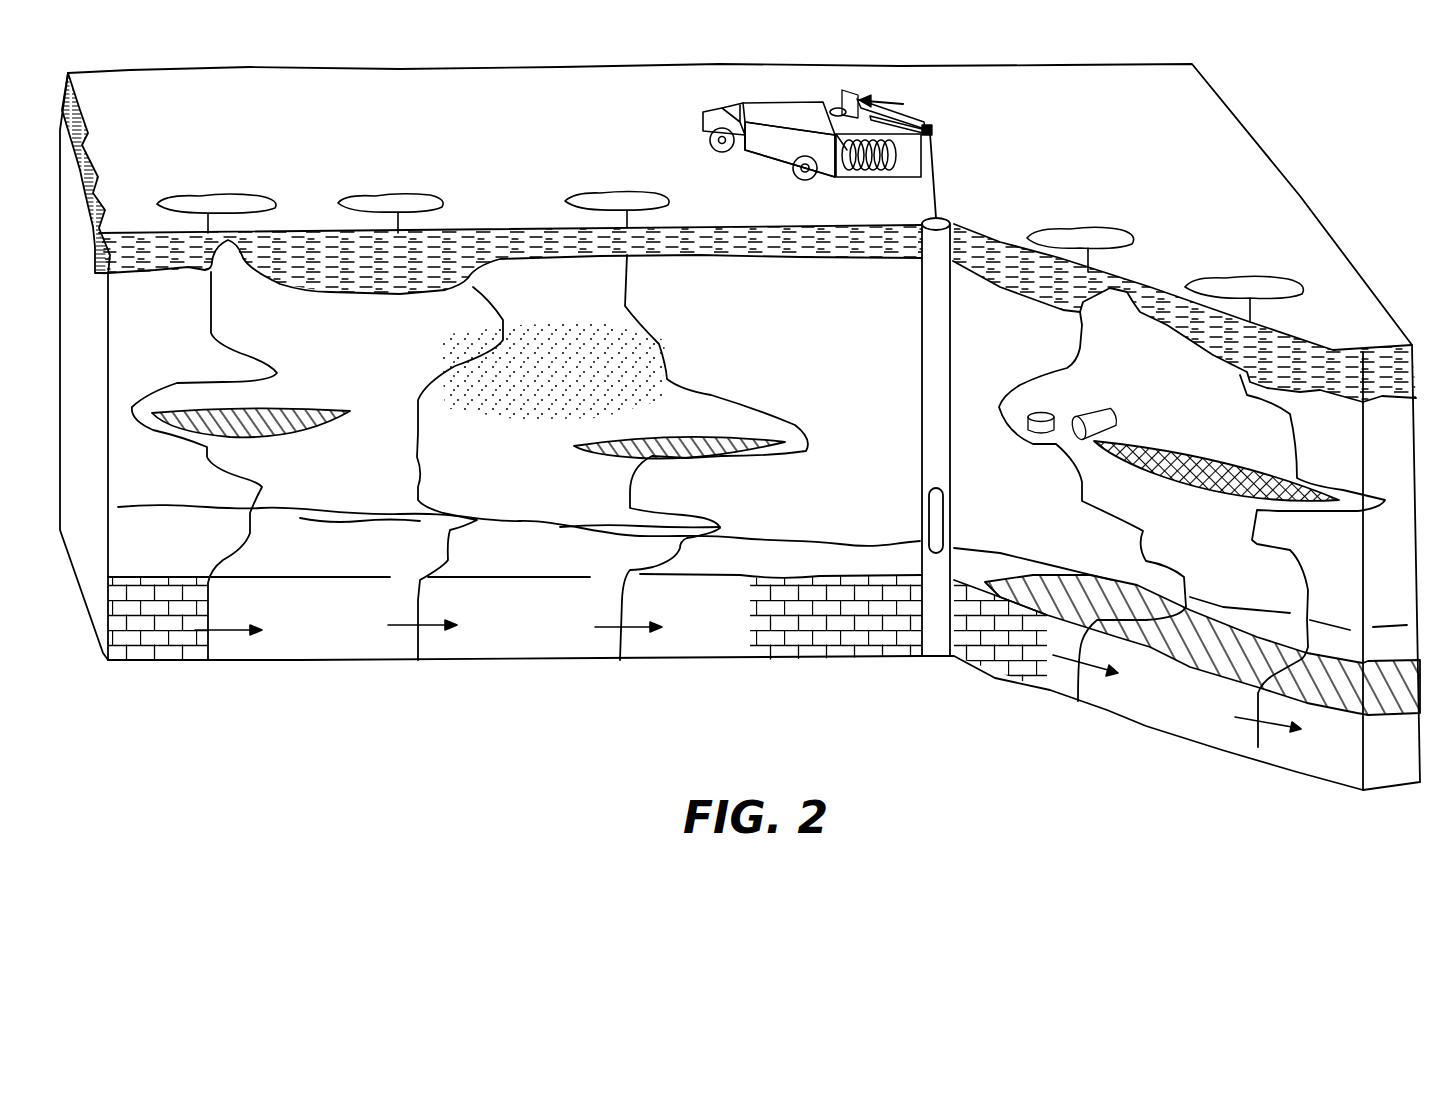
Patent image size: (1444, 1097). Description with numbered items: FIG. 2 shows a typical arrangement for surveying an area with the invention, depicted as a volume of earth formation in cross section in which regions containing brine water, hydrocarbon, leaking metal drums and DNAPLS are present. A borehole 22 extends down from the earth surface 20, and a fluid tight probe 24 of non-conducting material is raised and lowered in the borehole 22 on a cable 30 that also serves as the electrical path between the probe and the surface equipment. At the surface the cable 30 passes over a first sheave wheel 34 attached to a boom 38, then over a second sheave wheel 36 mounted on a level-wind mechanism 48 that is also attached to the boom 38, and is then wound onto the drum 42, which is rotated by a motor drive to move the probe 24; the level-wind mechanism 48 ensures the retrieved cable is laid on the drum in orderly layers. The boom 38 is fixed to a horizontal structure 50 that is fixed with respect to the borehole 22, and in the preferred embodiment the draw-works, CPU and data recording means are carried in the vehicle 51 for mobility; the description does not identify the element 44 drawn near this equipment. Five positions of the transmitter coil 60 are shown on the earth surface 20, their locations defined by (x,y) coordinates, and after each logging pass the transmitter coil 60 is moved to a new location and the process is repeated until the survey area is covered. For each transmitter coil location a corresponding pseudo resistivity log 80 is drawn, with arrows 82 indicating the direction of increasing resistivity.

The earth surface 20 is at (1166, 149).
The borehole 22 is at (922, 330).
The fluid tight probe 24 is at (943, 526).
The cable 30 is at (937, 187).
The first sheave wheel 34 is at (932, 131).
The second sheave wheel 36 is at (890, 110).
The boom 38 is at (920, 115).
The drum 42 is at (857, 177).
The instrument housing 44 is at (872, 177).
The level-wind mechanism 48 is at (883, 103).
The horizontal structure 50 is at (774, 133).
The vehicle 51 is at (770, 153).
The transmitter coil 60 is at (373, 192).
The pseudo resistivity logs 80 is at (263, 487).
The arrows 82 is at (228, 628).